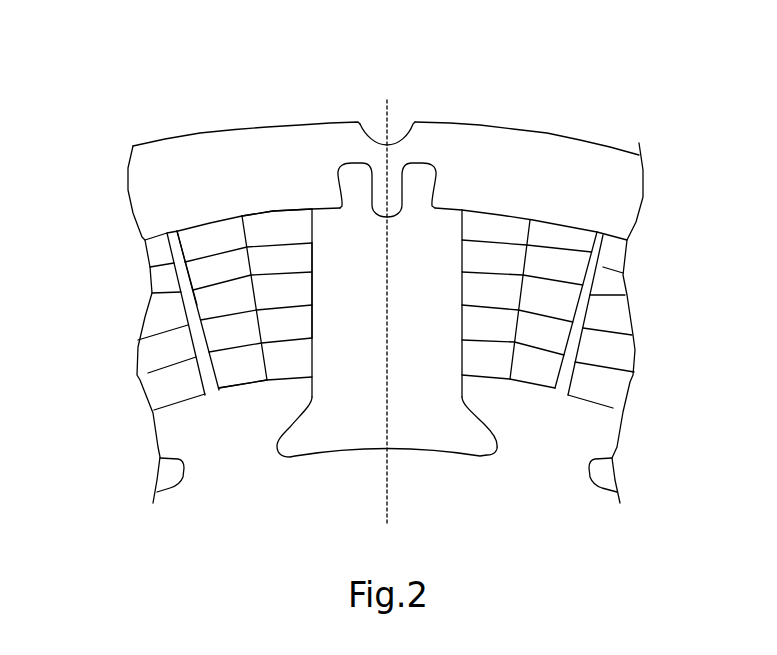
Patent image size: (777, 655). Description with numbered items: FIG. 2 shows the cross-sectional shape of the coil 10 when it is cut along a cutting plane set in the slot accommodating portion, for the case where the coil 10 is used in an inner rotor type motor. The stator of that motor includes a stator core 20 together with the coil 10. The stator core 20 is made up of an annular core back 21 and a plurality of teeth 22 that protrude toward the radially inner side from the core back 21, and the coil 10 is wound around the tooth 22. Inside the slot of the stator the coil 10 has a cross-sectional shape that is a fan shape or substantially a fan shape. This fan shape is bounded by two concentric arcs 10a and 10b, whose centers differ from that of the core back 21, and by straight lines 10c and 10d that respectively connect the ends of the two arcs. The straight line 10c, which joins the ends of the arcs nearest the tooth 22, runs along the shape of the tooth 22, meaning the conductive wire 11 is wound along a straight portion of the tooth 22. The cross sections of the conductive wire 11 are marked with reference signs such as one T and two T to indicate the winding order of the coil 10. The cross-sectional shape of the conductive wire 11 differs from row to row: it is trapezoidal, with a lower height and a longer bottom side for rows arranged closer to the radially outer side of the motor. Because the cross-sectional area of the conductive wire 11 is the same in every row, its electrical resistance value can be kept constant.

The stator core 20 is at (213, 87).
The core back 21 is at (540, 153).
The tooth 22 is at (452, 437).
The coil 10 is at (625, 281).
The arc 10a is at (247, 382).
The arc 10b is at (272, 208).
The straight line 10c is at (313, 285).
The straight line 10d is at (179, 274).
The conductive wire 11 is at (587, 228).